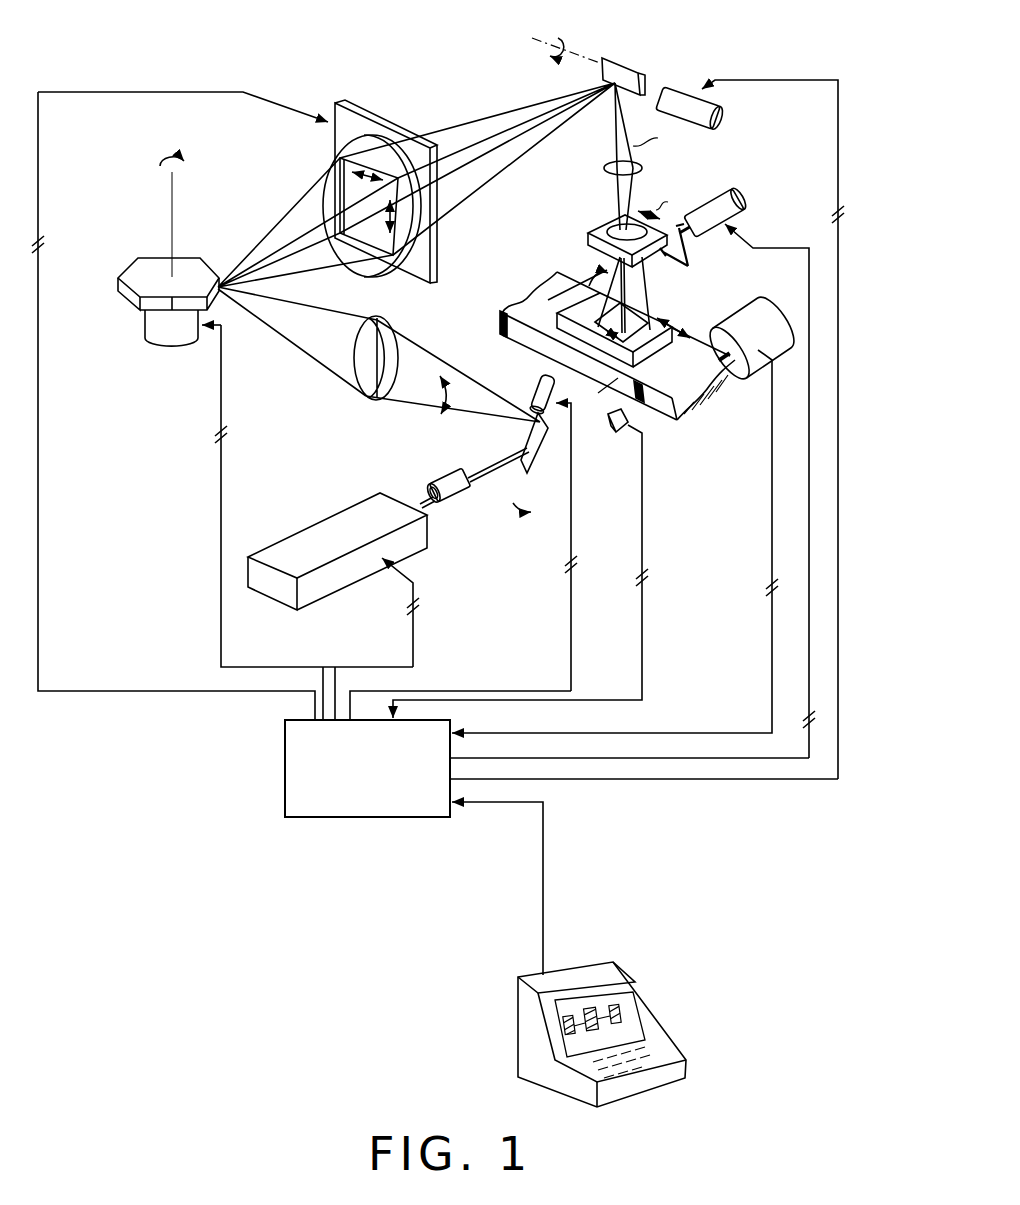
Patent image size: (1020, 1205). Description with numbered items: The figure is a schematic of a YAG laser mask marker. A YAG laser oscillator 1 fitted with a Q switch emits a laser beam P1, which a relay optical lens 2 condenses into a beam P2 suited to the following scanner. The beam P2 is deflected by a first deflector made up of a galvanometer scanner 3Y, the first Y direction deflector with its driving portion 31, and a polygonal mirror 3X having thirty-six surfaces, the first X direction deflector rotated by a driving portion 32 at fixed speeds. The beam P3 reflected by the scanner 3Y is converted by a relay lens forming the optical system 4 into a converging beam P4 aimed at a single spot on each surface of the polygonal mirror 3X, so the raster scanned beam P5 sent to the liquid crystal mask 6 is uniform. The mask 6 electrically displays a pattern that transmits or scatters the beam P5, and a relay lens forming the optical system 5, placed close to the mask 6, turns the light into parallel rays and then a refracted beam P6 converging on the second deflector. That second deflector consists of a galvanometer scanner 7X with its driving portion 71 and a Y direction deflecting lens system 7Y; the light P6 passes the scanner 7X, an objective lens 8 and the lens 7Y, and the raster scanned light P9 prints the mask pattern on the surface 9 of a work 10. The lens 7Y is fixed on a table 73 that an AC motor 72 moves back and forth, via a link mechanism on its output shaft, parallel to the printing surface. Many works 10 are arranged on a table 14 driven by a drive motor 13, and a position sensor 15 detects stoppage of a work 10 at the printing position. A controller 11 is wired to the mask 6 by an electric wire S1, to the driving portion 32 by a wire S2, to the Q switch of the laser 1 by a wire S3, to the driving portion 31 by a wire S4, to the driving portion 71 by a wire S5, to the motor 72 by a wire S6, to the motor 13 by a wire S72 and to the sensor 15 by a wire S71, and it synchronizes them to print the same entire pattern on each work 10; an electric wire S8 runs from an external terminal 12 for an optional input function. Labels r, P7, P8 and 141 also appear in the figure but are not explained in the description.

The YAG laser oscillator 1 is at (270, 540).
The optical lens 2 is at (444, 478).
The polygonal mirror 3X is at (192, 259).
The galvanometer scanner 3Y is at (537, 475).
The optical system 4 is at (375, 226).
The optical system 5 is at (333, 167).
The liquid crystal mask 6 is at (370, 113).
The galvanometer scanner 7X is at (630, 62).
The lens system 7Y is at (604, 232).
The objective lens 8 is at (643, 168).
The surface 9 is at (652, 318).
The work 10 is at (672, 333).
The controller 11 is at (285, 798).
The external terminal 12 is at (645, 1008).
The drive motor 13 is at (780, 305).
The table 14 is at (617, 370).
The position sensor 15 is at (610, 434).
The driving portion 31 is at (536, 386).
The driving portion 32 is at (145, 332).
The driving portion 71 is at (677, 73).
The AC motor 72 is at (730, 192).
The table 73 is at (578, 268).
The table slide portion 141 is at (677, 373).
The relay lens r is at (398, 345).
The laser beam P1 is at (430, 512).
The condensed laser beam P2 is at (493, 472).
The laser beam P3 is at (403, 395).
The converging beam P4 is at (305, 337).
The raster scanned light beam P5 is at (310, 260).
The raster scanned light P6 is at (492, 170).
The laser beam path P7 is at (614, 154).
The laser beam path P8 is at (618, 195).
The raster scanned light P9 is at (632, 298).
The electric wire S1 is at (38, 548).
The electric wire S2 is at (221, 636).
The electric wire S3 is at (413, 650).
The electric wire S4 is at (571, 648).
The electric wire S5 is at (838, 460).
The electric wire S6 is at (809, 525).
The electric wire S71 is at (642, 612).
The electric wire S72 is at (772, 680).
The electric wire S8 is at (543, 872).